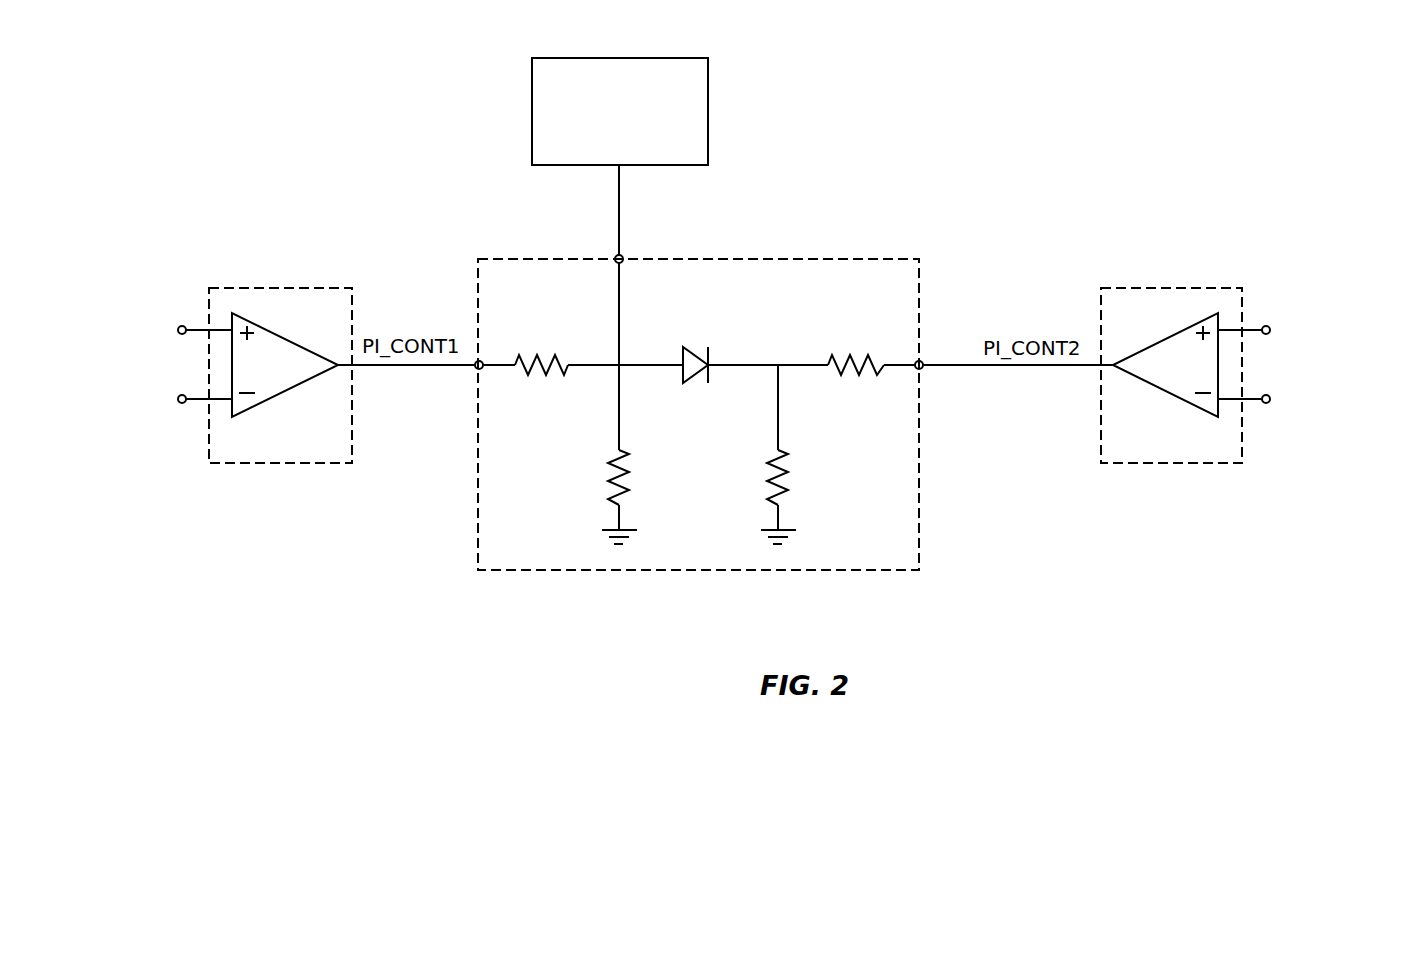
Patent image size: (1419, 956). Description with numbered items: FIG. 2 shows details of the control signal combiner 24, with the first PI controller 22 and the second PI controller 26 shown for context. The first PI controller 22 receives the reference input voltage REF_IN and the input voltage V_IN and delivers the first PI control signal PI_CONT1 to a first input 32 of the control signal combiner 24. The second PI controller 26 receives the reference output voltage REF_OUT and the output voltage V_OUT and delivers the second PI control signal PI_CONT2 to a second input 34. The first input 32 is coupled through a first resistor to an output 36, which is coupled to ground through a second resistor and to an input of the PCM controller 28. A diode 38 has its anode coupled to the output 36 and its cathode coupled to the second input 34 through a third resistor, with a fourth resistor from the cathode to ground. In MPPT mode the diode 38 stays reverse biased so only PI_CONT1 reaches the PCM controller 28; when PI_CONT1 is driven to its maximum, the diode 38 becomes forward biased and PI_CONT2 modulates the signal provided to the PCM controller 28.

The first proportional-integral (PI) controller 22 is at (338, 455).
The control signal combiner 24 is at (697, 393).
The second PI controller 26 is at (1228, 455).
The peak current mode (PCM) controller 28 is at (607, 144).
The first input 32 is at (477, 368).
The second input 34 is at (922, 361).
The output 36 is at (622, 256).
The diode 38 is at (690, 350).